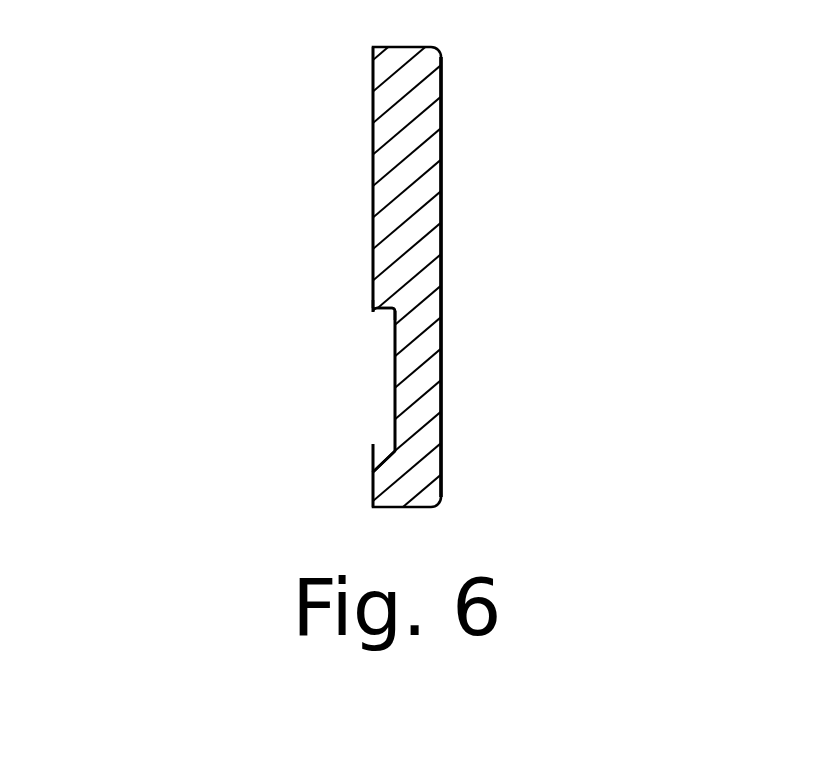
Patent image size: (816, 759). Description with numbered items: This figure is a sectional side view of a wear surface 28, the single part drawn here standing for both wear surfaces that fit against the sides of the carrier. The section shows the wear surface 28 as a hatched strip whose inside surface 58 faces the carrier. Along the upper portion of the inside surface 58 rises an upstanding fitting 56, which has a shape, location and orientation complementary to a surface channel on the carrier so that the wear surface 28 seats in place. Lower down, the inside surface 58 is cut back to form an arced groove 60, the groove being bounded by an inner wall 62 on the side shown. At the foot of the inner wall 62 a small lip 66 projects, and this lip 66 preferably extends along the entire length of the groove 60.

The wear surface 28 is at (526, 62).
The upstanding fitting 56 is at (318, 203).
The inside surface 58 is at (200, 290).
The arced groove 60 is at (263, 385).
The lip 66 is at (390, 456).
The inner wall 62 is at (373, 465).